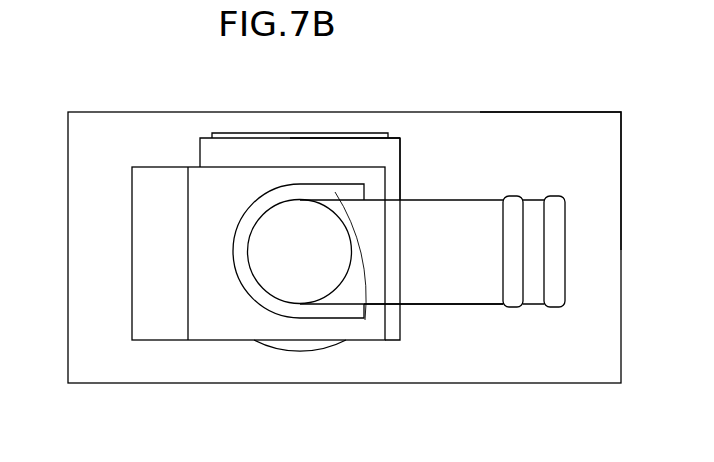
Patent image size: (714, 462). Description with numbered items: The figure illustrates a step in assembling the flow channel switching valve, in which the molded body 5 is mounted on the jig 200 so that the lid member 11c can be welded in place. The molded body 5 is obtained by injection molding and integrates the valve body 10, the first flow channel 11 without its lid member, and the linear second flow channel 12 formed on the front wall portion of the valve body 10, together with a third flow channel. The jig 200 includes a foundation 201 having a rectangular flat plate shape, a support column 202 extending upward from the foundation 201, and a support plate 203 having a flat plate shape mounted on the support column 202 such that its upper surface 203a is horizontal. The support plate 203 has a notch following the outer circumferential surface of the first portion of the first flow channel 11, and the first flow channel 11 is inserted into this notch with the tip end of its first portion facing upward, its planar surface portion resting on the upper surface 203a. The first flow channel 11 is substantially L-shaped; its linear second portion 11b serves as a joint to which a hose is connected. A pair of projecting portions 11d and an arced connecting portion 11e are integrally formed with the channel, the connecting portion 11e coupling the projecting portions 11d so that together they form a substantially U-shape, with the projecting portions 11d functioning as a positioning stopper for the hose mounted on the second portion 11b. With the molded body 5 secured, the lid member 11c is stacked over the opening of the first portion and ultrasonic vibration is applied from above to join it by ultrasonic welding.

The jig 200 is at (84, 112).
The foundation 201 is at (580, 112).
The support column 202 is at (145, 166).
The support plate 203 is at (226, 167).
The upper surface 203a is at (279, 173).
The valve body 10 is at (323, 152).
The molded body 5 is at (398, 136).
The first flow channel 11 is at (494, 307).
The second portion 11b is at (448, 297).
The lid member 11c is at (295, 296).
The projecting portions 11d is at (333, 312).
The connecting portion 11e is at (234, 254).
The second flow channel 12 is at (538, 308).